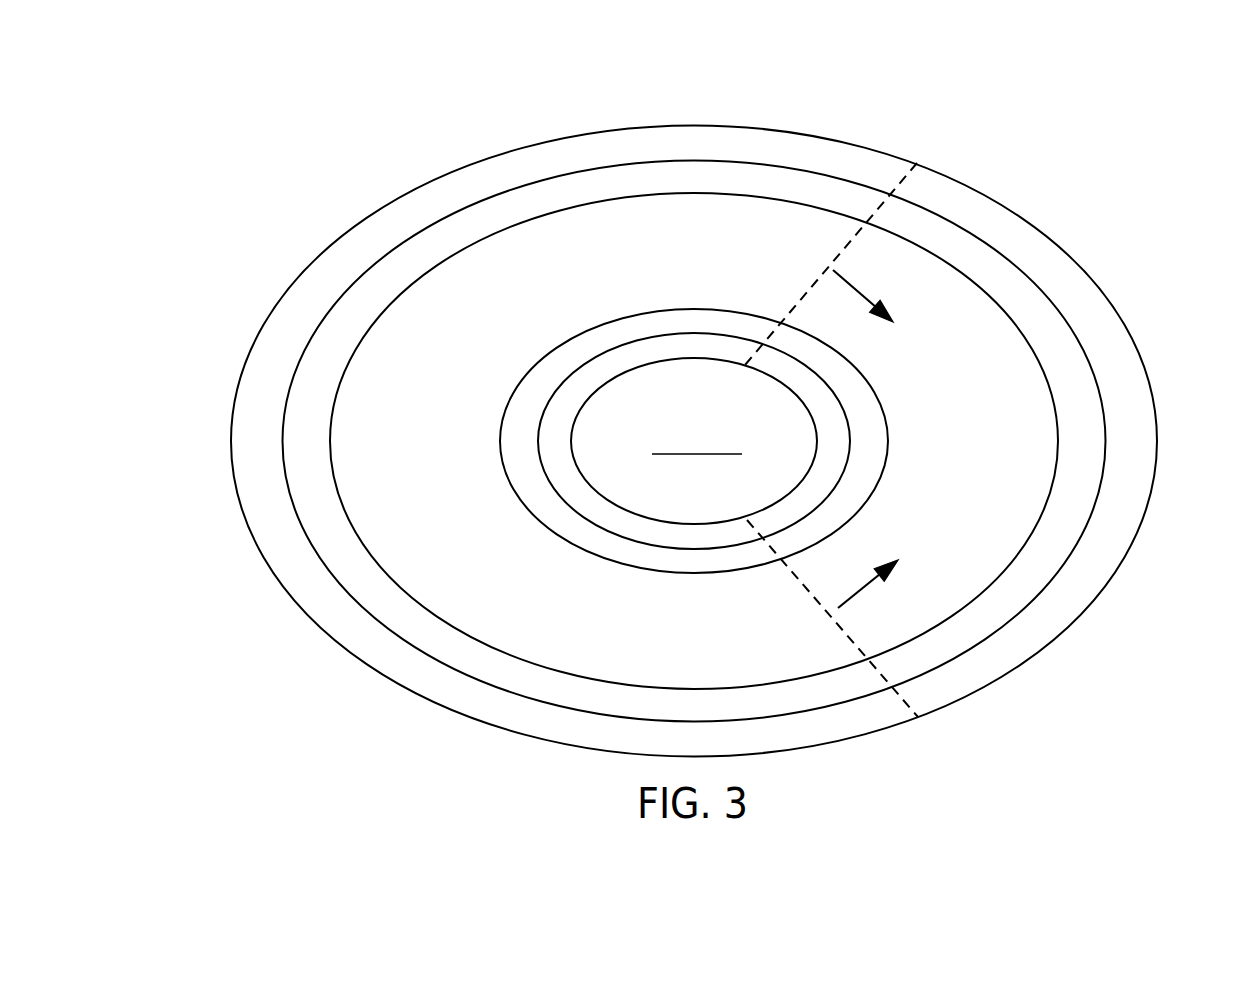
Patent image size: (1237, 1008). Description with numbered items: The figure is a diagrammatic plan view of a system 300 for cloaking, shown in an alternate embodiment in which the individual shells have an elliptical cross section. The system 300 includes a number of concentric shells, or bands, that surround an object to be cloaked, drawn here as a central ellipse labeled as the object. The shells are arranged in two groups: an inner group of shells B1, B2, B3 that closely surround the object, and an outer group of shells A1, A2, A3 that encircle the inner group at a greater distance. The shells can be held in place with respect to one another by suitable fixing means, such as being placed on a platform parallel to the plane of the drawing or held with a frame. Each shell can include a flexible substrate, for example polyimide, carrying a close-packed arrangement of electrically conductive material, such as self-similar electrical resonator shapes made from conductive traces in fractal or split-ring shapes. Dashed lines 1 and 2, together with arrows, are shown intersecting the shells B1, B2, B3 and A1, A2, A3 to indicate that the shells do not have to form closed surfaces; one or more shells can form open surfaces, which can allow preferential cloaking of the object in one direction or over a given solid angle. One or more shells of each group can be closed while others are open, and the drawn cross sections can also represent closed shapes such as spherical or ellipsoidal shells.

The system for cloaking 300 is at (299, 95).
The shell A1 is at (390, 580).
The shell A2 is at (433, 657).
The shell A3 is at (507, 730).
The shell B1 is at (590, 392).
The shell B2 is at (545, 408).
The shell B3 is at (500, 430).
The dashed line 1 is at (842, 250).
The dashed line 2 is at (847, 633).